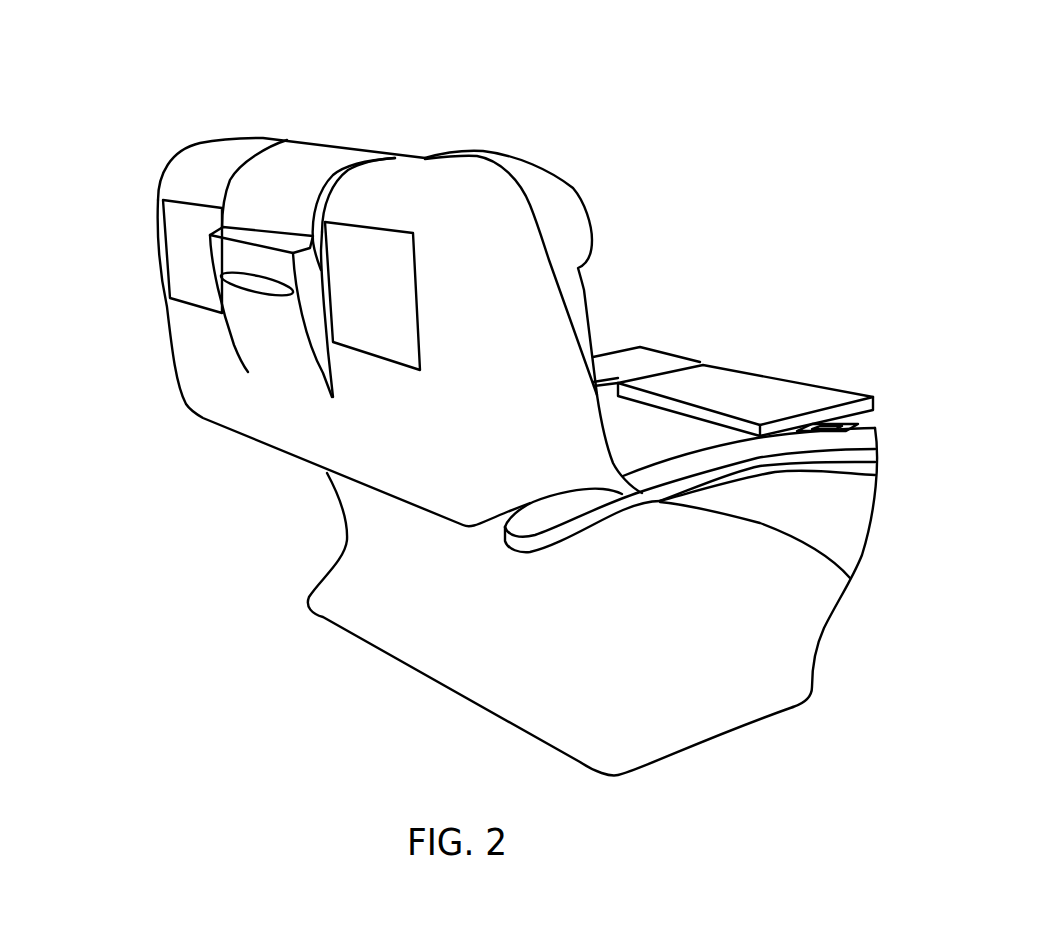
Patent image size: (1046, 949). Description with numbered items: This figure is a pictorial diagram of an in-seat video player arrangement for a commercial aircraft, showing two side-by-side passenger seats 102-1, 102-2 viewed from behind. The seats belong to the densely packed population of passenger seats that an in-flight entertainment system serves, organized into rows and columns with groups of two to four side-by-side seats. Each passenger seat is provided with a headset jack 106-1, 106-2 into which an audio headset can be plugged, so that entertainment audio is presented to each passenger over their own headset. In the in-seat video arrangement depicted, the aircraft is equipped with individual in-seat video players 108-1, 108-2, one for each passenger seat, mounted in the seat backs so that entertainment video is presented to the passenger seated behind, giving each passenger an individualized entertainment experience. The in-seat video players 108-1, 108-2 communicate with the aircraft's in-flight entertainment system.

The passenger seat 102-1 is at (524, 122).
The passenger seat 102-2 is at (595, 429).
The headset jack 106-1 is at (816, 413).
The headset jack 106-2 is at (827, 427).
The in-seat video player 108-1 is at (163, 251).
The in-seat video player 108-2 is at (372, 296).